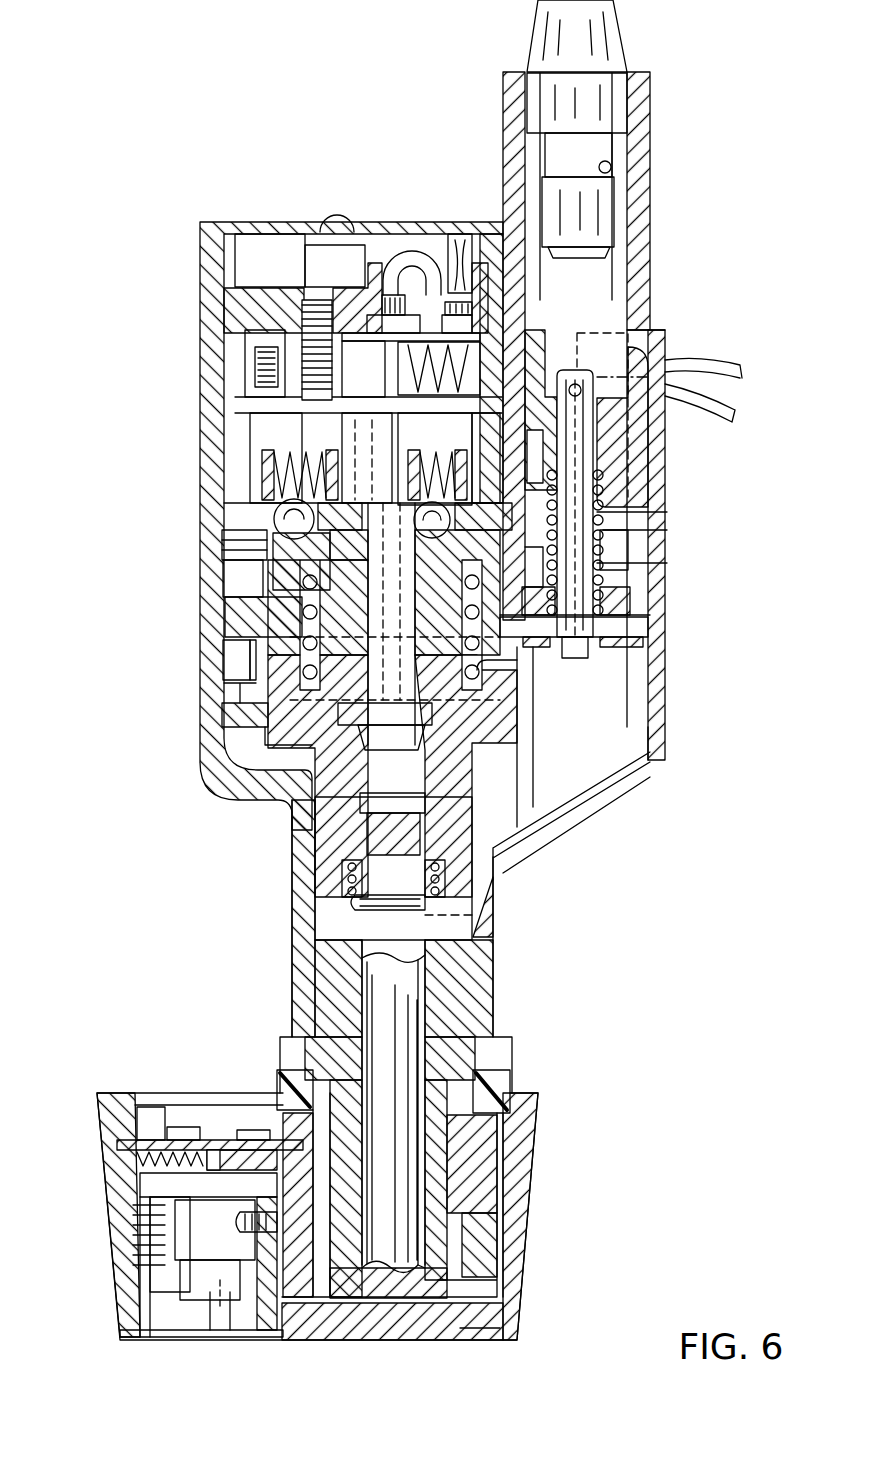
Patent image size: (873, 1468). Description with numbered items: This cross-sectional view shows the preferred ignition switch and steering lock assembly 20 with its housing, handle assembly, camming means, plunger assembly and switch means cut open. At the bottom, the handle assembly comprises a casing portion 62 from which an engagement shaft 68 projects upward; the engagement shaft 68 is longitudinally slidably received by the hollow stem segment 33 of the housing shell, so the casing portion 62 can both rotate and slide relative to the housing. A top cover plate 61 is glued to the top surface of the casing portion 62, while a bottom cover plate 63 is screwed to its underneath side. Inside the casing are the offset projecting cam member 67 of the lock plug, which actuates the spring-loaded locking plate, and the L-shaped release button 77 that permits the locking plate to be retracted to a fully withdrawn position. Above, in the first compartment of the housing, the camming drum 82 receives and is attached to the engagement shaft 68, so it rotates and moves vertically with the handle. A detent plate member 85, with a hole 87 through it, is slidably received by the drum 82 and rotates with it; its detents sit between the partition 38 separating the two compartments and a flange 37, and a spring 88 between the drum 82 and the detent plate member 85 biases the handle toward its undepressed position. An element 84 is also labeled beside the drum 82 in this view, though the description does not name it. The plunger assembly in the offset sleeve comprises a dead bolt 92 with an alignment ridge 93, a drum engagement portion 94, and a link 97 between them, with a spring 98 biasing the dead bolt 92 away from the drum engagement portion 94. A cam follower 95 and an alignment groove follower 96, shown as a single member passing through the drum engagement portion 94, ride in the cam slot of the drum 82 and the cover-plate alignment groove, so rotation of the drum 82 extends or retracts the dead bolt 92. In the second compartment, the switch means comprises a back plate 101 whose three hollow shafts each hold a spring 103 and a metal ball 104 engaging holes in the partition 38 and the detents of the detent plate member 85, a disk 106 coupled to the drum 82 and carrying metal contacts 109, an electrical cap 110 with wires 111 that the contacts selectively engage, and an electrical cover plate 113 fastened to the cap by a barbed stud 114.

The switch and lock assembly 20 is at (700, 1147).
The hollow stem segment 33 is at (482, 1000).
The flange 37 is at (245, 586).
The partition 38 is at (268, 492).
The top cover plate 61 is at (303, 1342).
The casing portion 62 is at (532, 1234).
The bottom cover plate 63 is at (243, 1140).
The projecting cam member 67 is at (217, 1140).
The engagement shaft 68 is at (373, 943).
The release button 77 is at (150, 1118).
The drum 82 is at (290, 724).
The bearing 84 is at (235, 660).
The detent plate member 85 is at (292, 560).
The hole 87 is at (300, 540).
The spring 88 is at (240, 626).
The dead bolt 92 is at (632, 62).
The alignment ridge 93 is at (640, 470).
The drum engagement portion 94 is at (627, 600).
The cam follower 95 is at (510, 645).
The alignment groove follower 96 is at (633, 630).
The link 97 is at (587, 573).
The spring 98 is at (628, 530).
The back plate 101 is at (238, 410).
The spring 103 is at (265, 468).
The metal ball 104 is at (270, 516).
The disk 106 is at (598, 398).
The metal contacts 109 is at (492, 255).
The electrical cap 110 is at (237, 332).
The wires 111 is at (398, 232).
The electrical cover plate 113 is at (245, 225).
The barbed stud 114 is at (335, 222).